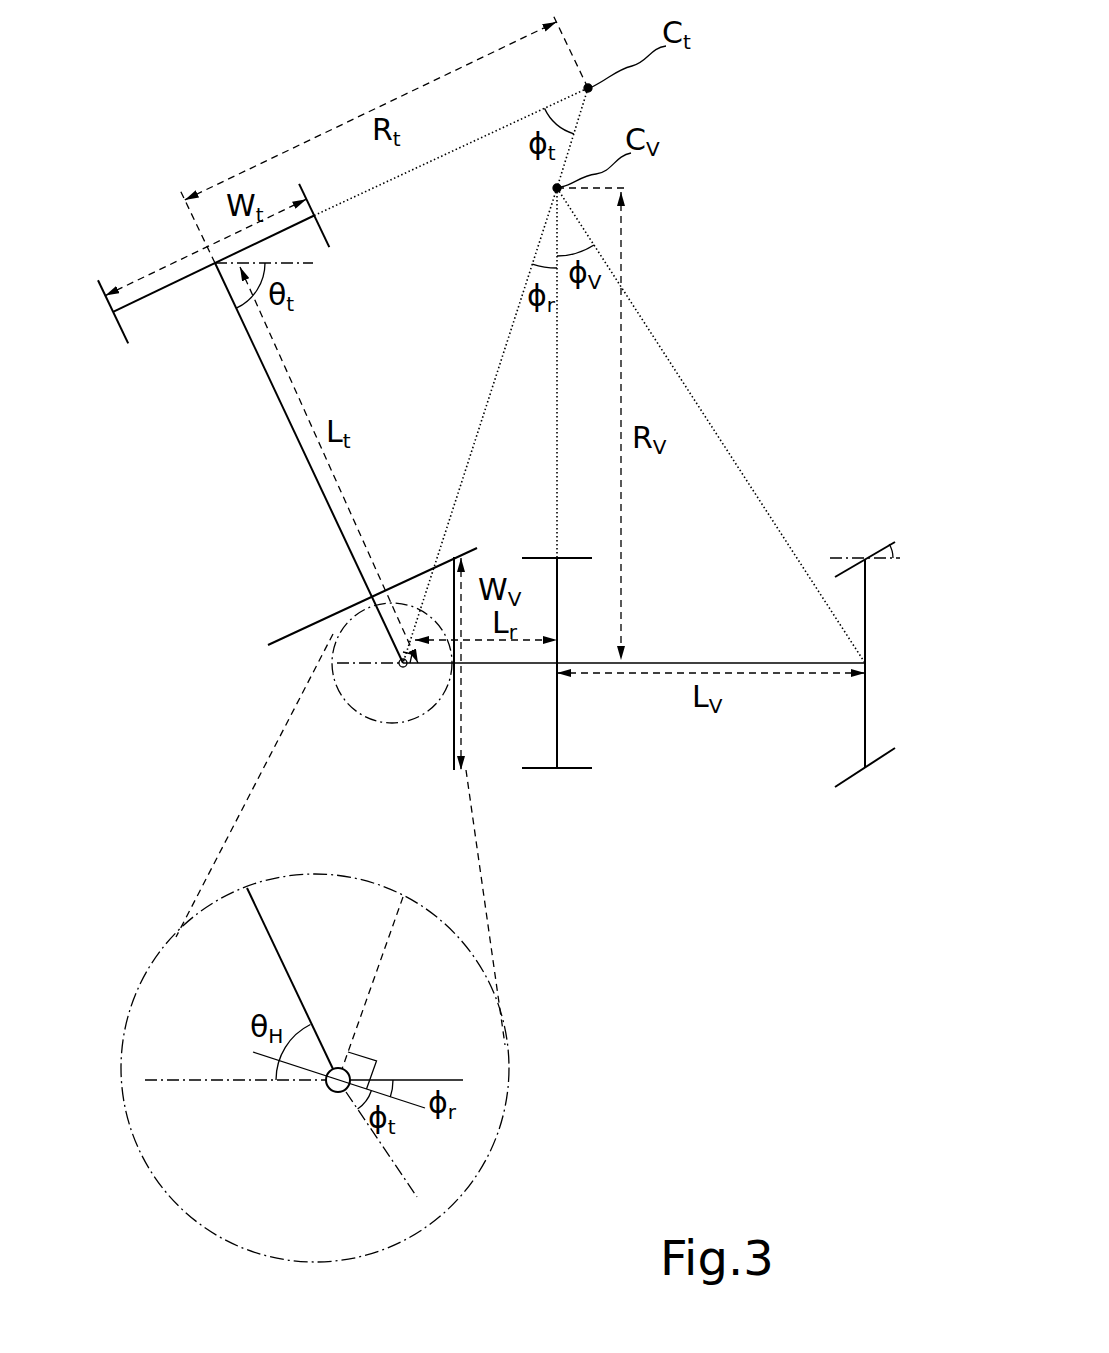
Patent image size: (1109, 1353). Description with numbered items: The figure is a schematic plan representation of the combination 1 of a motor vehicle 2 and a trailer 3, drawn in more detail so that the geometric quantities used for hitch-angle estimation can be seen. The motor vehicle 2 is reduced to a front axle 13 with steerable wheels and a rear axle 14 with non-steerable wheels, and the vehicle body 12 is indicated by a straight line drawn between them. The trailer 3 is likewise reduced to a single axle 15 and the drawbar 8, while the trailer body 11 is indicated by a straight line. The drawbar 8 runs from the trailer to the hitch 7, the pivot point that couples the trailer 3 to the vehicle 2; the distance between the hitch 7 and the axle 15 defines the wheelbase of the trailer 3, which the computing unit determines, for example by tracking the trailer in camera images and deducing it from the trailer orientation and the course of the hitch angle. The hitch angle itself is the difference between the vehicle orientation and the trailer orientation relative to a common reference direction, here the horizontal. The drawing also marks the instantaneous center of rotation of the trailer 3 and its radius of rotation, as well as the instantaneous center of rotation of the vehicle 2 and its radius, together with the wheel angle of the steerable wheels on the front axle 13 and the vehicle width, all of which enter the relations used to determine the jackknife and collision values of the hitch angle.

The combination 1 is at (806, 339).
The motor vehicle 2 is at (669, 804).
The trailer 3 is at (187, 520).
The hitch 7 is at (334, 1092).
The drawbar 8 is at (378, 618).
The trailer body 11 is at (283, 645).
The vehicle body 12 is at (454, 740).
The front axle 13 is at (892, 707).
The rear axle 14 is at (570, 732).
The axle 15 is at (178, 303).